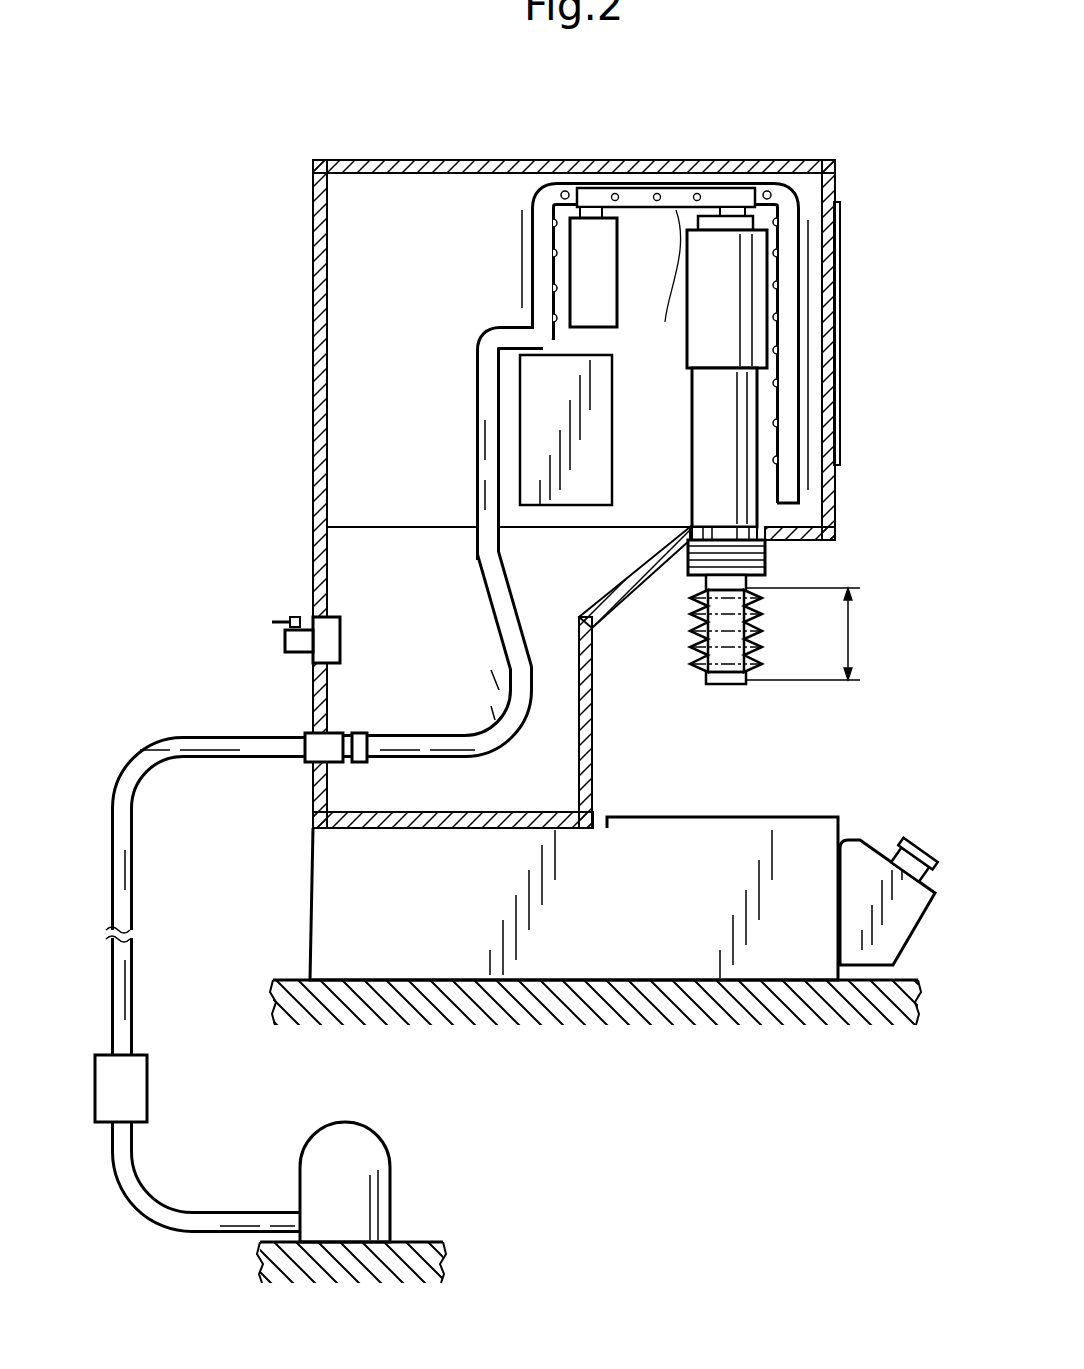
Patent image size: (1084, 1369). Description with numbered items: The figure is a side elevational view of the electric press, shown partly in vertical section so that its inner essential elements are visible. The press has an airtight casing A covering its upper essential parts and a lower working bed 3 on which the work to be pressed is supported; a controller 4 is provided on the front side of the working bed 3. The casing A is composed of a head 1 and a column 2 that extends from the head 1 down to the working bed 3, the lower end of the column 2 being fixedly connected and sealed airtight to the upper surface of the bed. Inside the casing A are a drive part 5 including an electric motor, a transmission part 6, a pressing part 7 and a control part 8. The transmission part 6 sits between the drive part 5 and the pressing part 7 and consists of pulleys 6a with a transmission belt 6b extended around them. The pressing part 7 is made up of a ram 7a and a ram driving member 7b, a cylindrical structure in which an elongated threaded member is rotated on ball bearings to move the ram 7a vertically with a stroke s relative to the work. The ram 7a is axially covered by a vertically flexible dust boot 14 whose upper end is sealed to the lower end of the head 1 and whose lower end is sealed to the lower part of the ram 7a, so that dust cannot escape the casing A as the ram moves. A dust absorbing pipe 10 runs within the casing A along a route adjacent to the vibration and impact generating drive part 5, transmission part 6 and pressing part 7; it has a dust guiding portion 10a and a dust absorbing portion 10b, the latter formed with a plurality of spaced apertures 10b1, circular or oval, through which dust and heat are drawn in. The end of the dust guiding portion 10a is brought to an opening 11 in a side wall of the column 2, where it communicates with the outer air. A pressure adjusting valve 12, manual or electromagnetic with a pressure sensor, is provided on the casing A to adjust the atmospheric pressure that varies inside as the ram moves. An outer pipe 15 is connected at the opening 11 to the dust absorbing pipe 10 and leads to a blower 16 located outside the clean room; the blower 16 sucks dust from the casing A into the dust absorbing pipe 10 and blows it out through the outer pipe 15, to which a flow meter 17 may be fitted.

The head 1 is at (818, 162).
The column 2 is at (594, 791).
The working bed 3 is at (807, 817).
The controller 4 is at (866, 842).
The drive part 5 is at (586, 335).
The transmission part 6 is at (650, 210).
The pulleys 6a is at (601, 216).
The transmission belt 6b is at (661, 280).
The pressing part 7 is at (686, 414).
The ram 7a is at (755, 584).
The ram driving member 7b is at (691, 496).
The control part 8 is at (580, 466).
The dust absorbing pipe 10 is at (454, 732).
The dust guiding portion 10a is at (476, 450).
The dust absorbing portion 10b is at (787, 165).
The apertures 10b1 is at (562, 192).
The opening 11 is at (306, 741).
The pressure adjusting valve 12 is at (283, 641).
The dust boot 14 is at (690, 567).
The outer pipe 15 is at (192, 736).
The blower 16 is at (375, 1163).
The flow meter 17 is at (148, 1075).
The casing A is at (447, 152).
The stroke s is at (805, 634).